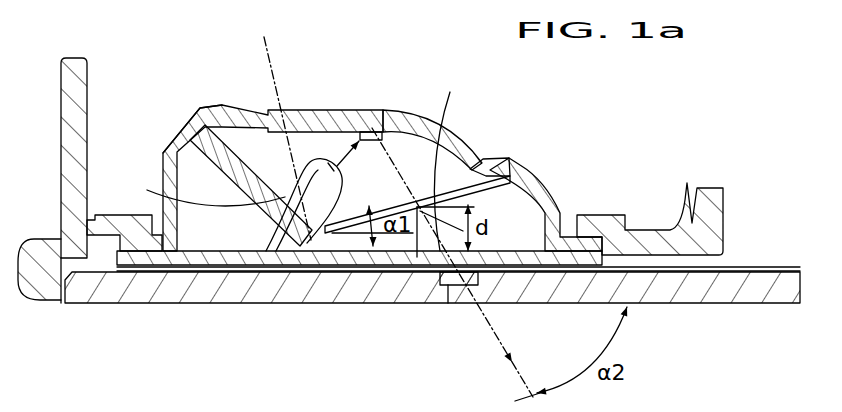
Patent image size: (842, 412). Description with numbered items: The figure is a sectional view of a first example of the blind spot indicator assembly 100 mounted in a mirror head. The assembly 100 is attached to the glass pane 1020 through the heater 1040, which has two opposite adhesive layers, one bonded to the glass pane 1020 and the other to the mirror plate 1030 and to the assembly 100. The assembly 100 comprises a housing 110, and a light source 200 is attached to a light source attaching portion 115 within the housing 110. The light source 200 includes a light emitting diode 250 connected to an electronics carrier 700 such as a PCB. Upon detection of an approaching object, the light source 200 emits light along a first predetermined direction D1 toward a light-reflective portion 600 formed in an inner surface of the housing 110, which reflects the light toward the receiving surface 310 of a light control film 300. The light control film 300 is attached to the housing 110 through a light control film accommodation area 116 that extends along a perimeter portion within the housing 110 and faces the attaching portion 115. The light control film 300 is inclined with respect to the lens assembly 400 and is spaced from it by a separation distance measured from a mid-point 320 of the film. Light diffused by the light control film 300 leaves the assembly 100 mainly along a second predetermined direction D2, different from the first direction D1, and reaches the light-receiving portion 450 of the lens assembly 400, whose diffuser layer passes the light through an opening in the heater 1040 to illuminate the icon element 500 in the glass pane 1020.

The blind spot indicator assembly 100 is at (210, 95).
The housing 110 is at (547, 174).
The light source attaching portion 115 is at (193, 112).
The light control film accommodation area 116 is at (512, 158).
The light source 200 is at (320, 160).
The light emitting diode 250 is at (192, 189).
The light control film 300 is at (481, 184).
The receiving surface 310 is at (459, 159).
The mid-point 320 is at (415, 252).
The lens assembly 400 is at (205, 252).
The light-receiving portion 450 is at (510, 251).
The icon element 500 is at (450, 300).
The light-reflective portion 600 is at (371, 130).
The electronics carrier 700 is at (207, 145).
The glass pane 1020 is at (662, 293).
The mirror plate 1030 is at (78, 62).
The heater 1040 is at (760, 267).
The first predetermined direction D1 is at (277, 126).
The second predetermined direction D2 is at (498, 340).